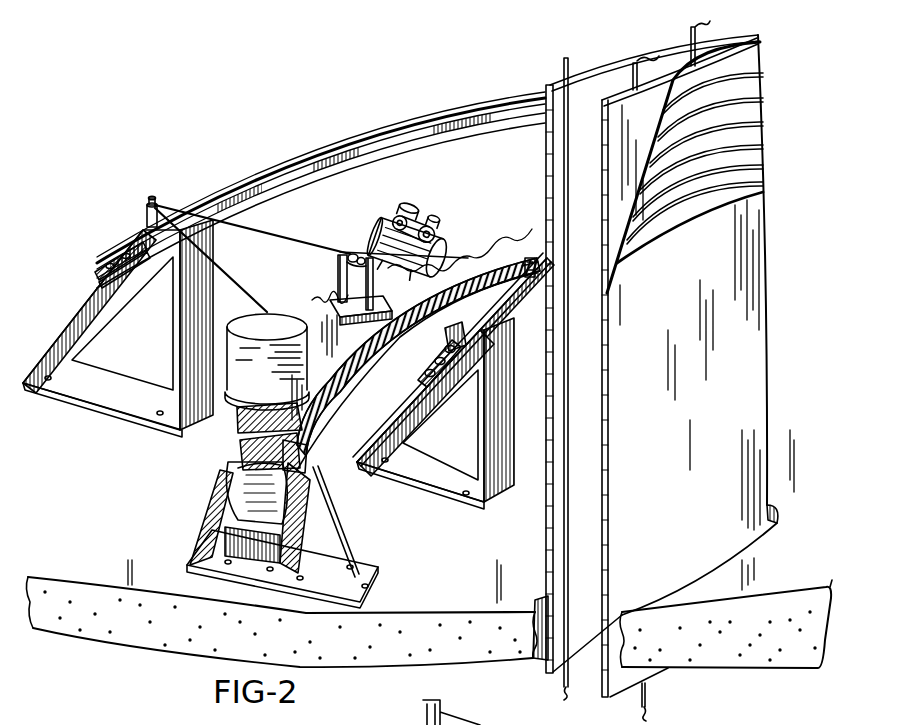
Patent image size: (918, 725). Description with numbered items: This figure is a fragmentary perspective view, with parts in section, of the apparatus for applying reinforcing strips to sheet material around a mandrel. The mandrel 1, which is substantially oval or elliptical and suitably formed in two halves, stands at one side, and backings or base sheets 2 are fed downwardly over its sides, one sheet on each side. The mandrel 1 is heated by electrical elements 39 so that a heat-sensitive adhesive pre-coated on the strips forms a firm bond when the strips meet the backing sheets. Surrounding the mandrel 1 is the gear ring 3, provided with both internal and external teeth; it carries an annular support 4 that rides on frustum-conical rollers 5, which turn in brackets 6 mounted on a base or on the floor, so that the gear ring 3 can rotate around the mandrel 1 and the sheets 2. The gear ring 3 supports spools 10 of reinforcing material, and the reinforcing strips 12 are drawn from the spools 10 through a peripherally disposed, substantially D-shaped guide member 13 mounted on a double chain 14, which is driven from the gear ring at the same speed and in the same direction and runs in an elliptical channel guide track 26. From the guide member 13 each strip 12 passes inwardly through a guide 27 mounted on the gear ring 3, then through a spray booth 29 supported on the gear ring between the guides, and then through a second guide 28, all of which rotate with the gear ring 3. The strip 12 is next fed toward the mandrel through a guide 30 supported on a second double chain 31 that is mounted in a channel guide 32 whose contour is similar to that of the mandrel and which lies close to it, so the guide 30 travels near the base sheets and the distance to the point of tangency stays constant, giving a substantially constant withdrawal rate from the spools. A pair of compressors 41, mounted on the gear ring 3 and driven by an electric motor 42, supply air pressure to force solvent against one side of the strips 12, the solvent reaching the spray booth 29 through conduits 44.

The mandrel 1 is at (545, 511).
The base sheets 2 is at (612, 282).
The gear ring 3 is at (323, 317).
The annular support 4 is at (104, 192).
The rollers 5 is at (237, 488).
The brackets 6 is at (283, 545).
The spools 10 is at (268, 322).
The reinforcing strips 12 is at (290, 240).
The guide member 13 is at (153, 200).
The double chain 14 is at (113, 257).
The guide track 26 is at (347, 141).
The guide 27 is at (345, 252).
The second guide 28 is at (340, 270).
The spray booth 29 is at (360, 257).
The guide 30 is at (530, 258).
The double chain 31 is at (428, 362).
The channel guide 32 is at (446, 330).
The electrical elements 39 is at (692, 26).
The compressors 41 is at (445, 216).
The electric motor 42 is at (409, 208).
The conduits 44 is at (400, 293).